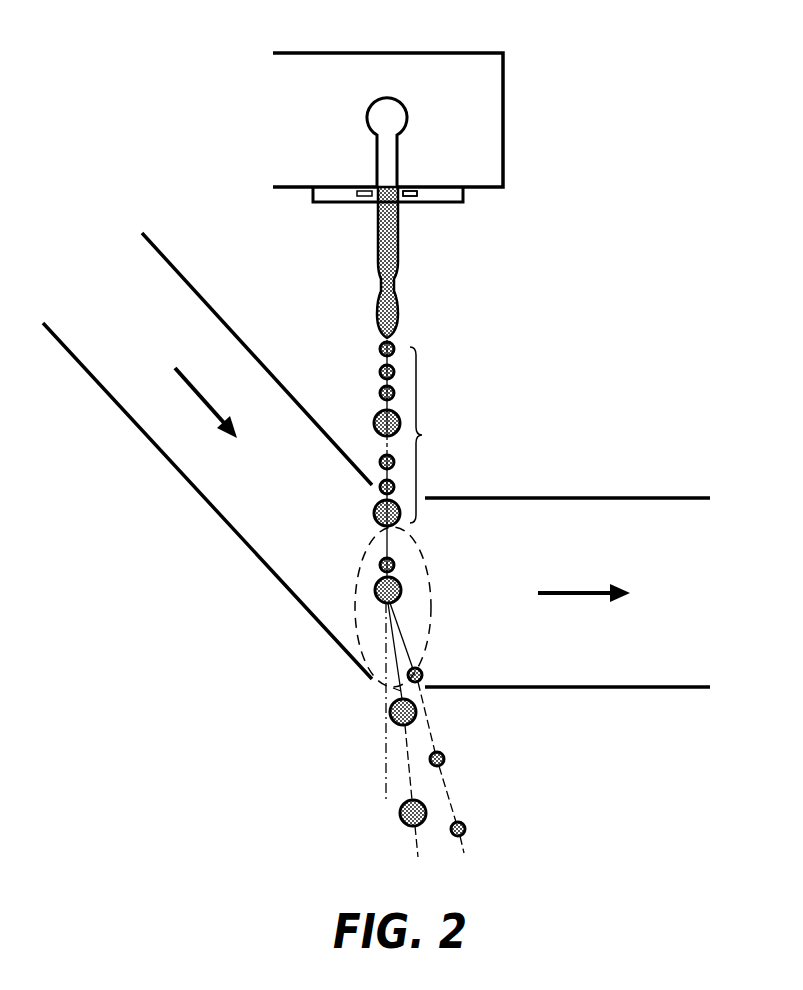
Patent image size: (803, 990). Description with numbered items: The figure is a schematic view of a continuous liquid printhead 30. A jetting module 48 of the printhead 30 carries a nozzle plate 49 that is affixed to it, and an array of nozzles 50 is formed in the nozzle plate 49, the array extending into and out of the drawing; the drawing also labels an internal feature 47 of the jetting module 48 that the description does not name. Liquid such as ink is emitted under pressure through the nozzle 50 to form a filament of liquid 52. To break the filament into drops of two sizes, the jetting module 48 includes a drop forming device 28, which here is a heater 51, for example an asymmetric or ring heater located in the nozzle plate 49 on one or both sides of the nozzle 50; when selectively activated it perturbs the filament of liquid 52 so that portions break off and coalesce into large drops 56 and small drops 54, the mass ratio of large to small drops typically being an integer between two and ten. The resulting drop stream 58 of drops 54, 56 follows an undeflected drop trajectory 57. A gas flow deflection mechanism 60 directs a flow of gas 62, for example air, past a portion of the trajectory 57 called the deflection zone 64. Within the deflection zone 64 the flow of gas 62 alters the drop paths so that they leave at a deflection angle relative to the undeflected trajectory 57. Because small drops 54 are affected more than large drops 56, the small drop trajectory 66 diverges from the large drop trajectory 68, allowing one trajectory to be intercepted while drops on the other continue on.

The continuous liquid printhead 30 is at (684, 86).
The fluid chamber 47 is at (386, 98).
The jetting module 48 is at (503, 94).
The nozzle plate 49 is at (463, 196).
The nozzle 50 is at (379, 200).
The heater 51 is at (356, 202).
The drop forming device 28 is at (417, 203).
The filament of liquid 52 is at (398, 278).
The small drops 54 is at (380, 370).
The large drops 56 is at (375, 420).
The drop trajectory 57 is at (385, 768).
The drop stream 58 is at (423, 459).
The gas flow deflection mechanism 60 is at (175, 467).
The flow of gas 62 is at (200, 402).
The deflection zone 64 is at (432, 631).
The small drop trajectory 66 is at (463, 845).
The large drop trajectory 68 is at (413, 844).